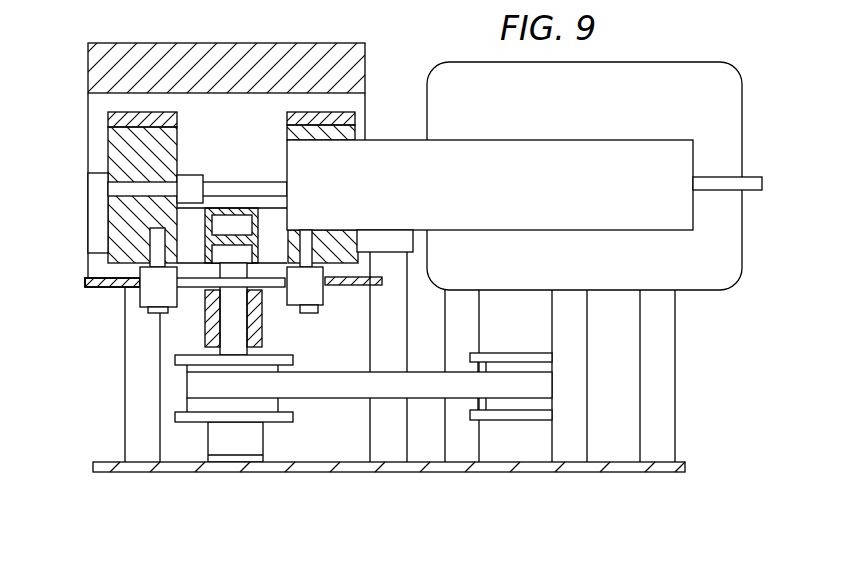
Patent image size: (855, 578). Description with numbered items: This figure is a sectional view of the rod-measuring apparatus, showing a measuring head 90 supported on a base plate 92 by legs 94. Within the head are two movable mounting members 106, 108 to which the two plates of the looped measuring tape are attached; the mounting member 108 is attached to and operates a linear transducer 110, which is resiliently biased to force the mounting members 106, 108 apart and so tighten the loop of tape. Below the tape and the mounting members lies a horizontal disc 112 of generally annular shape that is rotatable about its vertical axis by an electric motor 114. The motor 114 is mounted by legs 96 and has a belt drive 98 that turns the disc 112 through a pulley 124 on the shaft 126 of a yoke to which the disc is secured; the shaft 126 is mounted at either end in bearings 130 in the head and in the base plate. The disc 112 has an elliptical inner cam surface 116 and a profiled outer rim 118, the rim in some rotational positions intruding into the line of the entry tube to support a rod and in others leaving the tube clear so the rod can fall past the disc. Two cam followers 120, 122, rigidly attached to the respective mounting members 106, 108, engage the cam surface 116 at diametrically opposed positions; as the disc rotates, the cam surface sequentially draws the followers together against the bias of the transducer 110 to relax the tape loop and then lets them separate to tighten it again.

The measuring head 90 is at (86, 42).
The base plate 92 is at (310, 468).
The legs 94 is at (137, 385).
The legs 96 is at (565, 304).
The belt drive 98 is at (330, 386).
The mounting member 106 is at (115, 220).
The mounting member 108 is at (333, 252).
The linear transducer 110 is at (529, 195).
The horizontal disc 112 is at (103, 290).
The electric motor 114 is at (670, 72).
The elliptical inner cam surface 116 is at (330, 292).
The profiled outer rim 118 is at (85, 280).
The cam follower 120 is at (150, 292).
The cam follower 122 is at (312, 306).
The pulley 124 is at (258, 367).
The shaft 126 is at (237, 318).
The bearings 130 is at (228, 222).